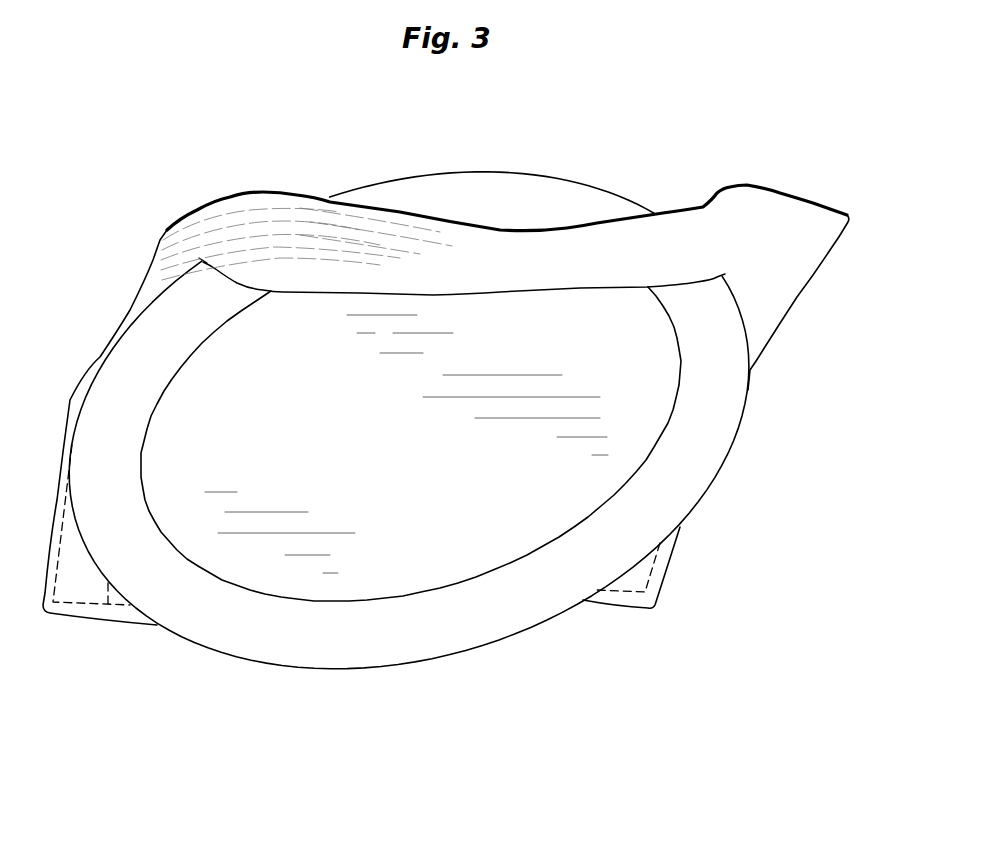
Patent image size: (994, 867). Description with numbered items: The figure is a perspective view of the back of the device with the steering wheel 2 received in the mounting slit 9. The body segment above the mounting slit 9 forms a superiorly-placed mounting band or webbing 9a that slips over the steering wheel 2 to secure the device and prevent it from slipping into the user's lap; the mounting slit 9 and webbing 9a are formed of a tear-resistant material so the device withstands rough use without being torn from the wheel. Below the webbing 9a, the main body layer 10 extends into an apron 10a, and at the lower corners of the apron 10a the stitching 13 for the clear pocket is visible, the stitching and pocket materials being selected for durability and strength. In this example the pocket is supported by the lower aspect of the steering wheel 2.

The steering wheel 2 is at (507, 635).
The mounting slit 9 is at (707, 292).
The mounting band or webbing 9a is at (600, 264).
The main body layer 10 is at (778, 218).
The apron 10a is at (617, 605).
The stitching 13 is at (660, 584).